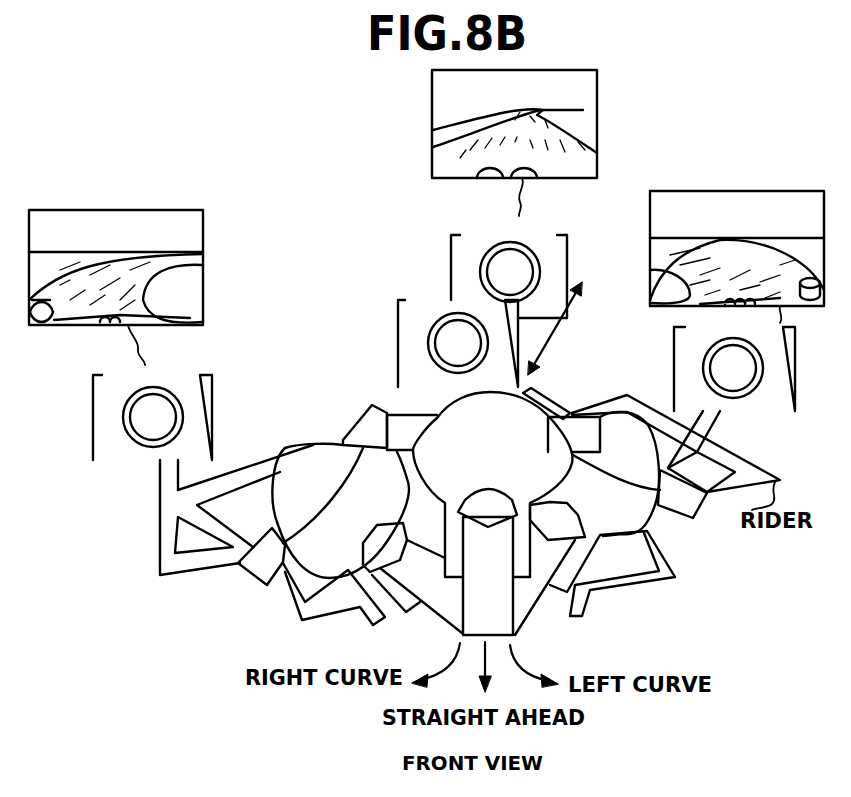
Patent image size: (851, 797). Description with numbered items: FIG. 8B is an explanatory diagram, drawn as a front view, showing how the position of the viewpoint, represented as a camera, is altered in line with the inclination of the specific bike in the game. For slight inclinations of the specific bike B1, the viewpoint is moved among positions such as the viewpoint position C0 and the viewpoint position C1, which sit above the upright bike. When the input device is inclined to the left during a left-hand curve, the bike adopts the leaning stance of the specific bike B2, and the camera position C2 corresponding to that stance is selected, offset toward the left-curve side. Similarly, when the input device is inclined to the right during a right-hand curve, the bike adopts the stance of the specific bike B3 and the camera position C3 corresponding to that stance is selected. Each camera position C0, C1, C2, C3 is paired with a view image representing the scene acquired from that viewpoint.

The viewpoint position C0 is at (398, 341).
The viewpoint position C1 is at (451, 267).
The camera position C2 is at (674, 340).
The camera position C3 is at (212, 395).
The specific bike B1 is at (525, 427).
The specific bike B2 is at (642, 505).
The specific bike B3 is at (332, 562).